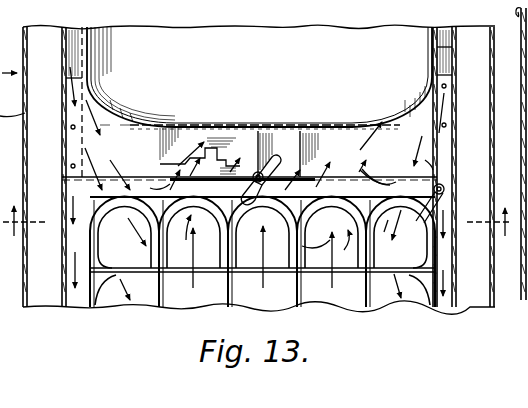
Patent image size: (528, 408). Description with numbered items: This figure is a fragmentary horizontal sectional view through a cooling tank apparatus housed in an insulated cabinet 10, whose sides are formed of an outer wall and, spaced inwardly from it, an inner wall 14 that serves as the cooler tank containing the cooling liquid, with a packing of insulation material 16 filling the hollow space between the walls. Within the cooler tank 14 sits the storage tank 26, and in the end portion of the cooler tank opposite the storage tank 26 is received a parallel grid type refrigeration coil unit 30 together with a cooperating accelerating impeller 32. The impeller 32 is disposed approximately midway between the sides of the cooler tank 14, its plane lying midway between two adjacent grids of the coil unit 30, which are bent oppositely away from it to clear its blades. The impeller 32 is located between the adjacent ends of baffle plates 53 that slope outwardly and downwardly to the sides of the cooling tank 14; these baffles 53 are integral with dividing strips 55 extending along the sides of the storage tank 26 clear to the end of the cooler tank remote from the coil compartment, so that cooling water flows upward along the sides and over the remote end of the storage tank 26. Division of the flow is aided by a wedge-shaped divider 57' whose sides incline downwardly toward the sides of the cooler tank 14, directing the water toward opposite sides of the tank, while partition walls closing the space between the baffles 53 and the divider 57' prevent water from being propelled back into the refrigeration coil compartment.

The insulated cabinet 10 is at (517, 358).
The inner wall 14 is at (62, 63).
The insulation material 16 is at (481, 132).
The storage tank 26 is at (431, 63).
The refrigeration coil unit 30 is at (160, 304).
The impeller 32 is at (282, 160).
The baffle plates 53 is at (369, 133).
The dividing strips 55 is at (447, 47).
The wedge-shaped divider 57' is at (237, 136).